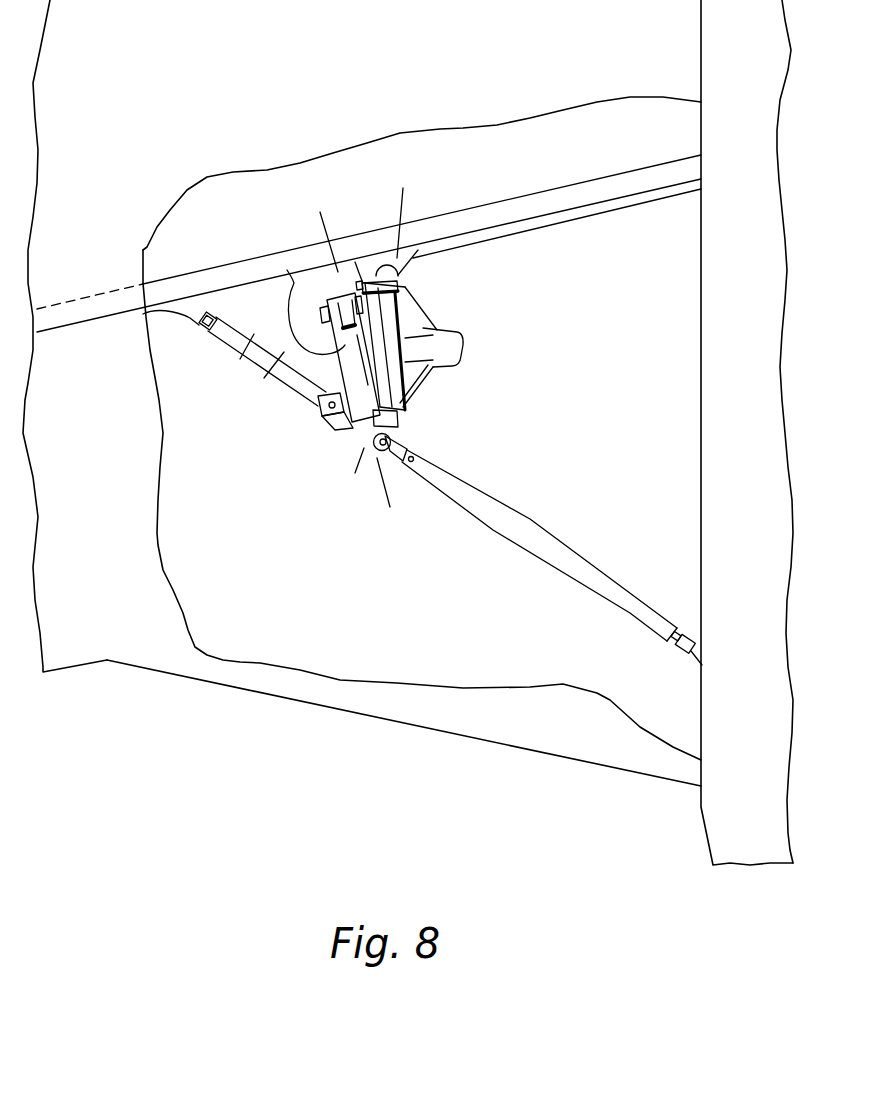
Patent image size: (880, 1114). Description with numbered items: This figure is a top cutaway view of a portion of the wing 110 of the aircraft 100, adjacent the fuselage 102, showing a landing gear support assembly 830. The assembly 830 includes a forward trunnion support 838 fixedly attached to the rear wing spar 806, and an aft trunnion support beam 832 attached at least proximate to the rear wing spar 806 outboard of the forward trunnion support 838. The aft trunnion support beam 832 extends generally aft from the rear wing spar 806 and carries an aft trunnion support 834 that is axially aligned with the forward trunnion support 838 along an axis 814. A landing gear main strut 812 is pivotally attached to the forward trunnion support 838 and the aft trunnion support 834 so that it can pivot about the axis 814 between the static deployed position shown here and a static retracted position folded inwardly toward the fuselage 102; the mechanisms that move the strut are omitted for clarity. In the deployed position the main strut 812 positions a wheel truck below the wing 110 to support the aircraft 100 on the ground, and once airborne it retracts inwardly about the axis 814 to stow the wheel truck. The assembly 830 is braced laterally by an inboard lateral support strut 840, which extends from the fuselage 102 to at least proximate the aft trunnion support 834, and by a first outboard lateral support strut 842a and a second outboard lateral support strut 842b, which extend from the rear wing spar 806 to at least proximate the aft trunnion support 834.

The aircraft 100 is at (192, 712).
The fuselage 102 is at (700, 827).
The wing 110 is at (64, 672).
The rear wing spar 806 is at (615, 178).
The landing gear main strut 812 is at (425, 395).
The axis 814 is at (463, 362).
The landing gear support assembly 830 is at (371, 354).
The aft trunnion support beam 832 is at (327, 300).
The aft trunnion support 834 is at (389, 433).
The forward trunnion support 838 is at (433, 270).
The inboard lateral support strut 840 is at (543, 559).
The first outboard lateral support strut 842a is at (282, 383).
The second outboard lateral support strut 842b is at (262, 360).